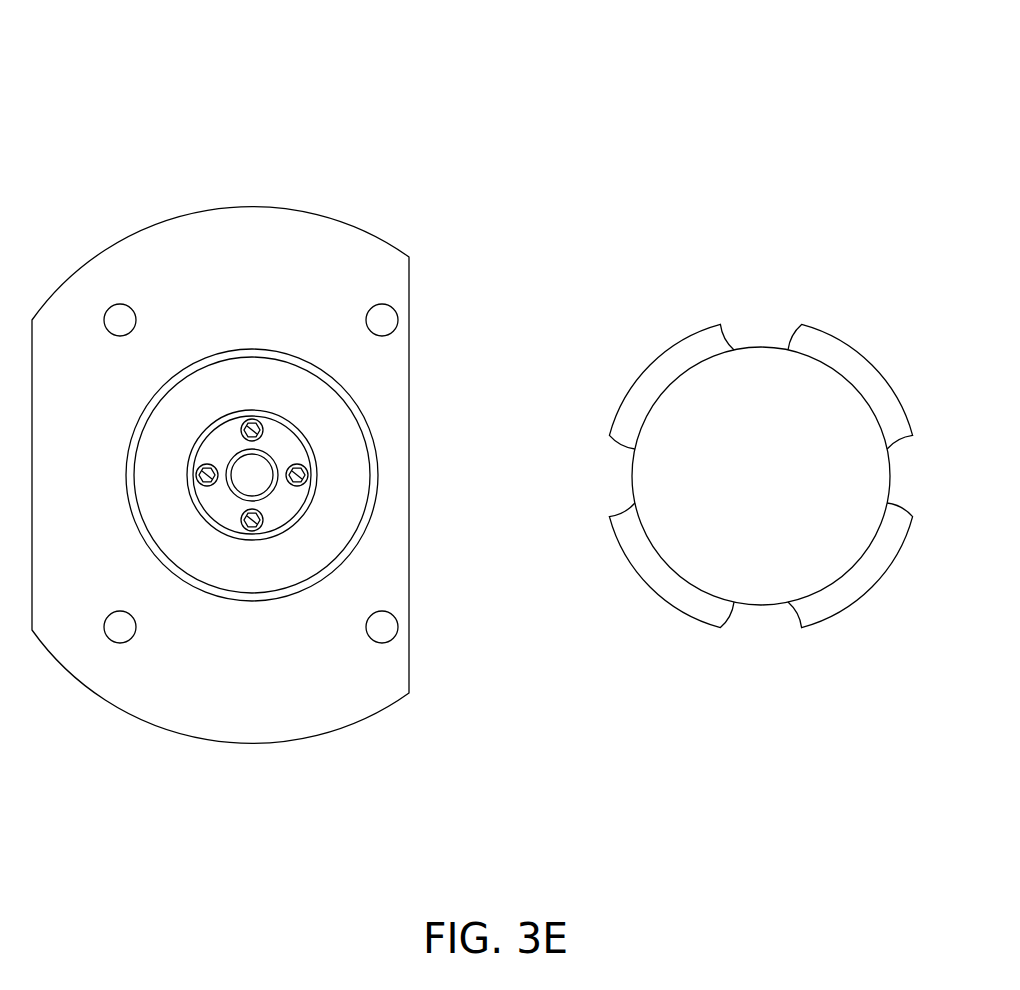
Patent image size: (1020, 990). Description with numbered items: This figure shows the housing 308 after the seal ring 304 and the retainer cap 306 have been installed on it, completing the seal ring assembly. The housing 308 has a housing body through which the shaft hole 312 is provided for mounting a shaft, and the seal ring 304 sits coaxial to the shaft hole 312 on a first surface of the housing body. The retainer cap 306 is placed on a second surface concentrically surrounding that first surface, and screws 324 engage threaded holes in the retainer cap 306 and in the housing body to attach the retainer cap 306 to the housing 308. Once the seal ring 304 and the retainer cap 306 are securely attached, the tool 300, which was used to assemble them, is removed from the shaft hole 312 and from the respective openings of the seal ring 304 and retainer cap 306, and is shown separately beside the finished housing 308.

The tool 300 is at (887, 655).
The seal ring 304 is at (272, 457).
The retainer cap 306 is at (280, 437).
The housing 308 is at (147, 175).
The shaft hole 312 is at (247, 480).
The screws 324 is at (198, 466).